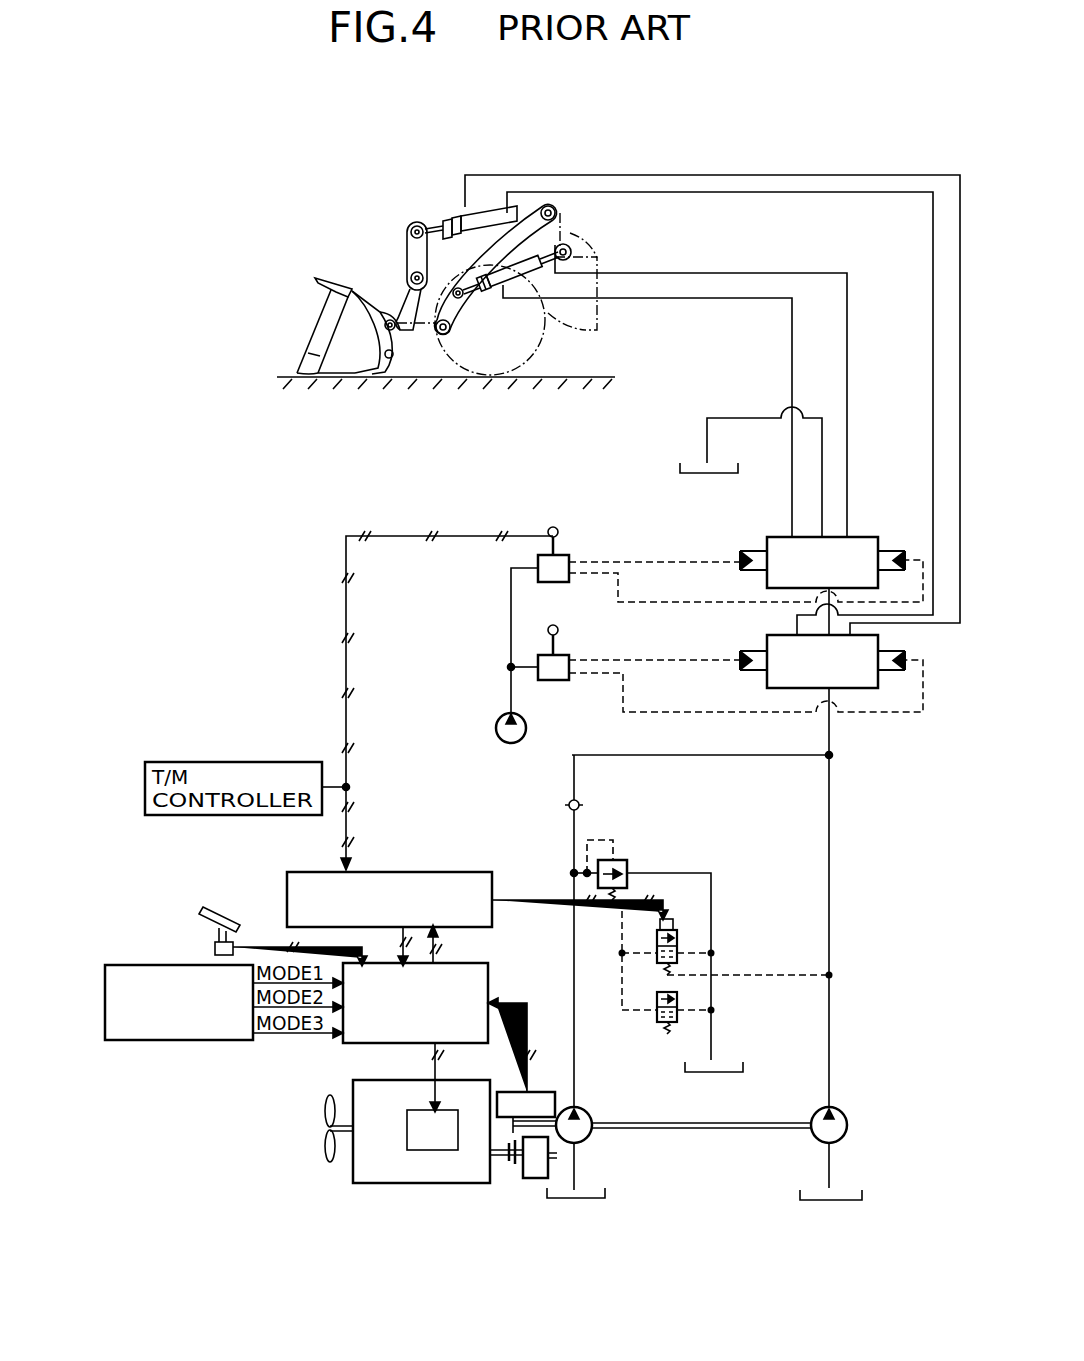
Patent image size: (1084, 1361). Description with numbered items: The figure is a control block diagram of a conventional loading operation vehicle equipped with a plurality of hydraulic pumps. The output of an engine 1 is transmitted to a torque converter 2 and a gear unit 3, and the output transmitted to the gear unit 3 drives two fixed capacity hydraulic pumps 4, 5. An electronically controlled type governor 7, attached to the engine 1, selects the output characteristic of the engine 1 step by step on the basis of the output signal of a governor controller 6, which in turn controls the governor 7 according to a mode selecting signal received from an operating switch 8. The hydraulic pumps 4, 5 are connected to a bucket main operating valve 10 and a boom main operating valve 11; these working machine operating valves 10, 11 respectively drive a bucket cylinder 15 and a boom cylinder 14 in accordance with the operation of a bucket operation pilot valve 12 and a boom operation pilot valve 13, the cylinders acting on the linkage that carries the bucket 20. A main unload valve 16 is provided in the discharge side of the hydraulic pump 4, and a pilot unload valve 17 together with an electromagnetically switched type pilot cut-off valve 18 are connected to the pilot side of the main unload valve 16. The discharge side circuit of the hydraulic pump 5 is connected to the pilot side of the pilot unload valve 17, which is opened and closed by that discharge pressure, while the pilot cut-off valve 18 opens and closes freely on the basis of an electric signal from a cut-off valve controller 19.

The engine 1 is at (353, 1085).
The torque converter 2 is at (535, 1178).
The gear unit 3 is at (507, 1165).
The fixed capacity hydraulic pump 4 is at (596, 1136).
The fixed capacity hydraulic pump 5 is at (850, 1123).
The governor controller 6 is at (488, 978).
The electronically controlled type governor 7 is at (455, 1150).
The operating switch 8 is at (197, 1042).
The bucket main operating valve 10 is at (767, 645).
The boom main operating valve 11 is at (864, 537).
The bucket operation pilot valve 12 is at (538, 665).
The boom operation pilot valve 13 is at (538, 562).
The boom cylinder 14 is at (566, 246).
The bucket cylinder 15 is at (488, 210).
The main unload valve 16 is at (616, 860).
The pilot unload valve 17 is at (657, 1015).
The pilot cut-off valve 18 is at (677, 932).
The cut-off valve controller 19 is at (420, 872).
The bucket 20 is at (338, 356).